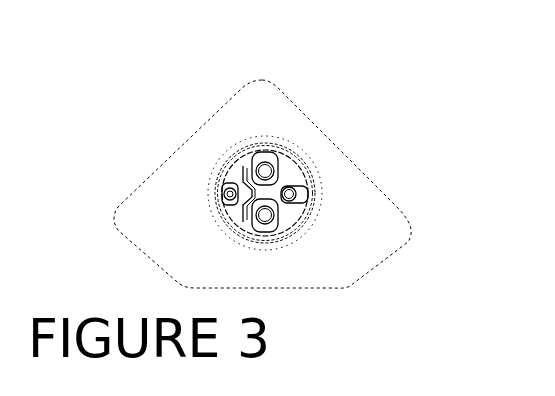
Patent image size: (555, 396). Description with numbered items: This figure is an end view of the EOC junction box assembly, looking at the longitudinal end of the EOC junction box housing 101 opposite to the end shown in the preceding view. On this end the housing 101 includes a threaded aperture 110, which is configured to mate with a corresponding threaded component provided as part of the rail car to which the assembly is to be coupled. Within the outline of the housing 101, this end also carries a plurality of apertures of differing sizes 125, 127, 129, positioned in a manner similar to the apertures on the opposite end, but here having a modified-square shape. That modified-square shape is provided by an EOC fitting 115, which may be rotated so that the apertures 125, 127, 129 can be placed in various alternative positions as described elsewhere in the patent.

The EOC junction box housing 101 is at (310, 113).
The threaded aperture 110 is at (233, 153).
The EOC fitting 115 is at (265, 215).
The aperture 125 is at (289, 192).
The aperture 127 is at (280, 210).
The aperture 129 is at (258, 163).